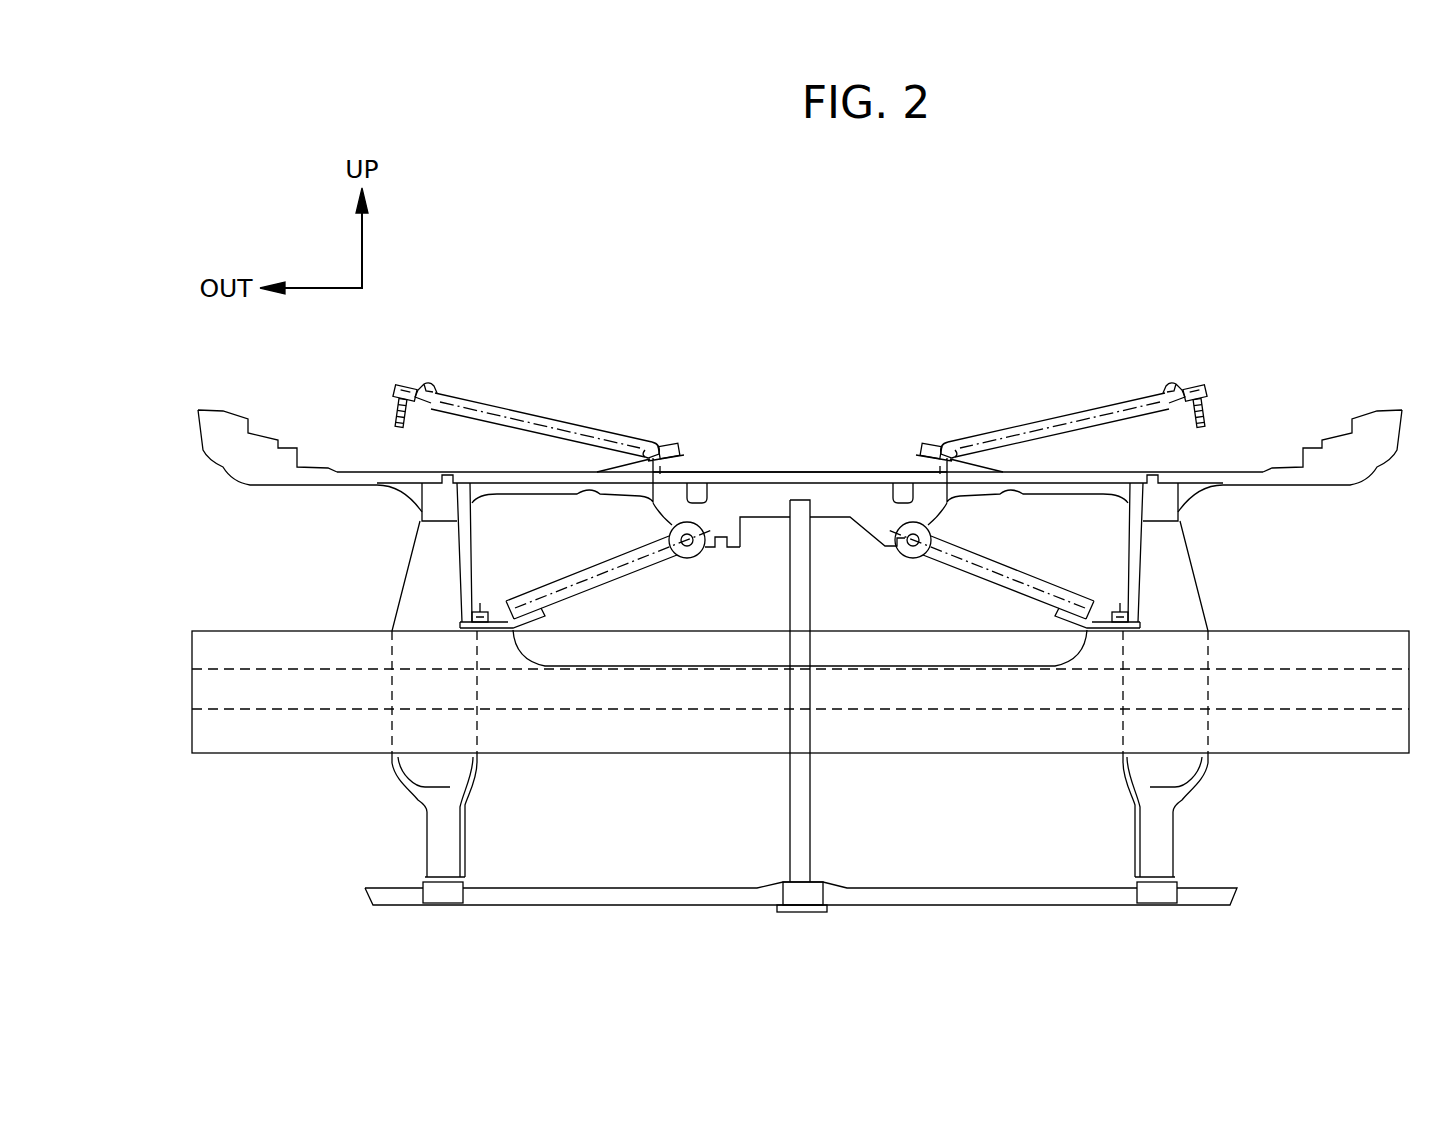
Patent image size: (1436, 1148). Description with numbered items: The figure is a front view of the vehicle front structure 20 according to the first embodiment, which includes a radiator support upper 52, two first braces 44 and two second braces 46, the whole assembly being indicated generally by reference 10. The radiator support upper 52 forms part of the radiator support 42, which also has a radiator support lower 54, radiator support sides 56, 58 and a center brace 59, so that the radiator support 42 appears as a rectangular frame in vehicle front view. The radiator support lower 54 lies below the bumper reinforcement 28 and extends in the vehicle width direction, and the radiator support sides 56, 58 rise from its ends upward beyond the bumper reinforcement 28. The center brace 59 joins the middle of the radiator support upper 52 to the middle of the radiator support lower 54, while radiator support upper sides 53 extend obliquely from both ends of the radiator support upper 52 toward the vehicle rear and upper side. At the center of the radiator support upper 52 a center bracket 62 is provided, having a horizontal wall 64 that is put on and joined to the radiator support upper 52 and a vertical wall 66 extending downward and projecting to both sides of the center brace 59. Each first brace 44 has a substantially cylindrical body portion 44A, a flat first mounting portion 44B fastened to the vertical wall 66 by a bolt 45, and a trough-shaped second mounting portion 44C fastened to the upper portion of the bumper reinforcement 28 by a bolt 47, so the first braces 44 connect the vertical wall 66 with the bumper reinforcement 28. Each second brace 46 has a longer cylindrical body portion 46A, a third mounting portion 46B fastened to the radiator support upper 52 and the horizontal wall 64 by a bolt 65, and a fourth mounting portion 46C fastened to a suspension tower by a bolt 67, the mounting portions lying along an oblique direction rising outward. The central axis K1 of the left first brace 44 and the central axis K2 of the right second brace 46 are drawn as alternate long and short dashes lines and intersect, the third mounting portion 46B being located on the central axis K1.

The vehicle roof structure 10 is at (1208, 297).
The vehicle front structure 20 is at (768, 572).
The bumper reinforcement 28 is at (1300, 630).
The radiator support 42 is at (523, 468).
The first brace 44 is at (538, 584).
The body portion 44A is at (582, 578).
The first mounting portion 44B is at (657, 522).
The second mounting portion 44C is at (533, 630).
The bolt 45 is at (690, 558).
The second brace 46 is at (592, 424).
The body portion 46A is at (492, 400).
The third mounting portion 46B is at (655, 440).
The fourth mounting portion 46C is at (428, 385).
The bolt 47 is at (480, 610).
The radiator support upper 52 is at (557, 470).
The radiator support upper side 53 is at (260, 472).
The radiator support lower 54 is at (610, 887).
The radiator support side 56 is at (466, 826).
The radiator support side 58 is at (1140, 838).
The center brace 59 is at (808, 828).
The center bracket 62 is at (760, 496).
The horizontal wall 64 is at (832, 470).
The bolt 65 is at (672, 445).
The vertical wall 66 is at (837, 502).
The bolt 67 is at (385, 408).
The straight line (central axis of first brace) K1 is at (600, 580).
The straight line (central axis of second brace) K2 is at (1034, 430).